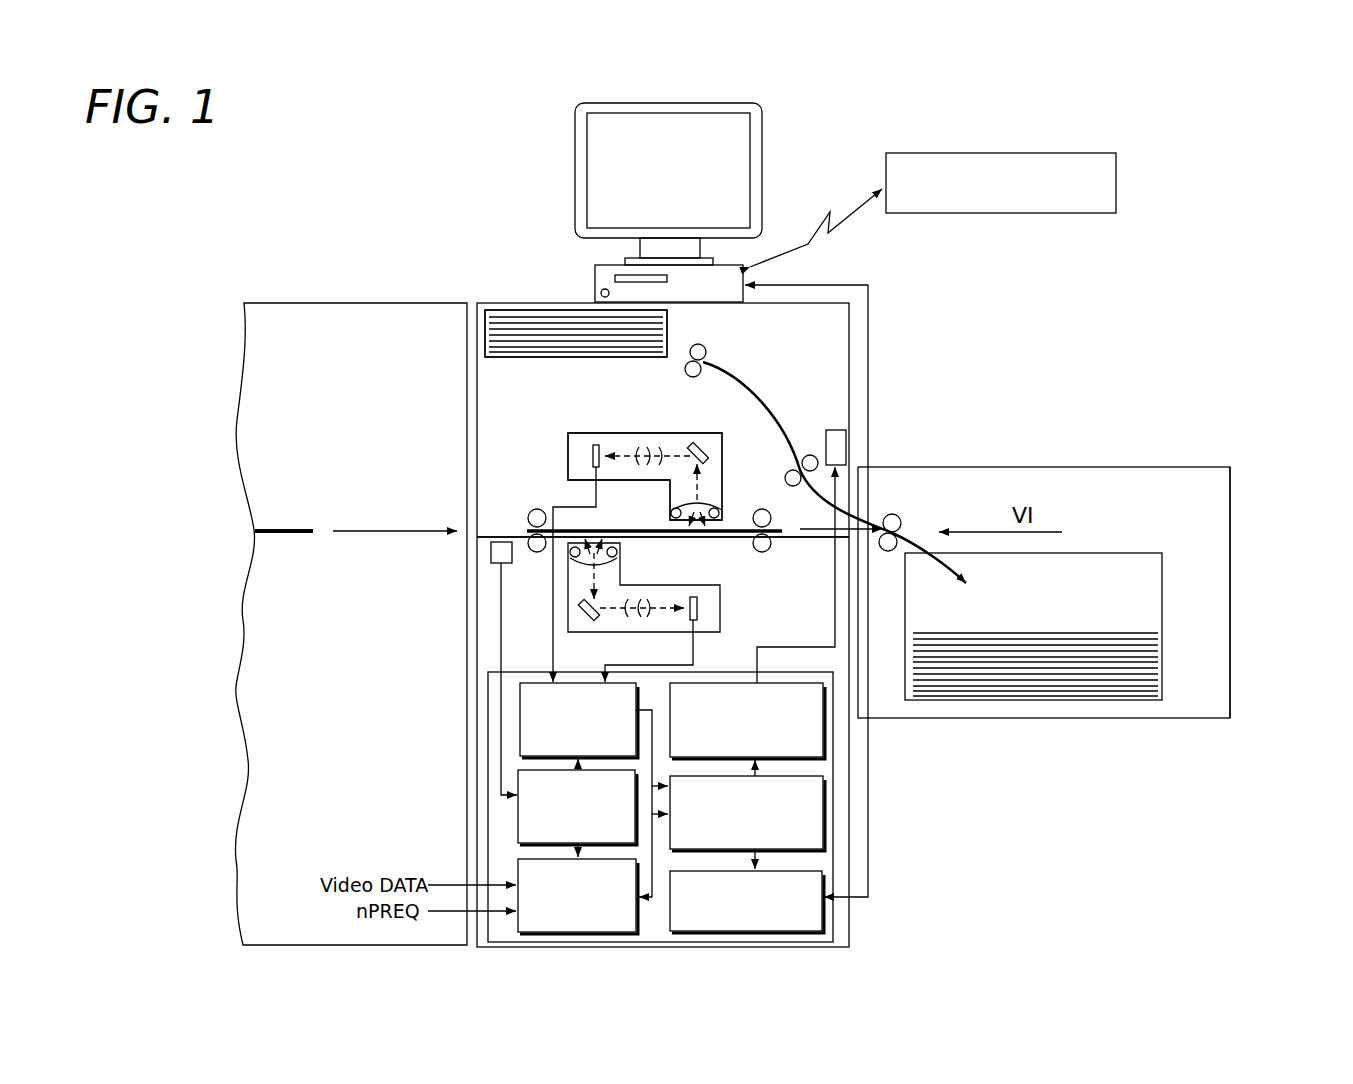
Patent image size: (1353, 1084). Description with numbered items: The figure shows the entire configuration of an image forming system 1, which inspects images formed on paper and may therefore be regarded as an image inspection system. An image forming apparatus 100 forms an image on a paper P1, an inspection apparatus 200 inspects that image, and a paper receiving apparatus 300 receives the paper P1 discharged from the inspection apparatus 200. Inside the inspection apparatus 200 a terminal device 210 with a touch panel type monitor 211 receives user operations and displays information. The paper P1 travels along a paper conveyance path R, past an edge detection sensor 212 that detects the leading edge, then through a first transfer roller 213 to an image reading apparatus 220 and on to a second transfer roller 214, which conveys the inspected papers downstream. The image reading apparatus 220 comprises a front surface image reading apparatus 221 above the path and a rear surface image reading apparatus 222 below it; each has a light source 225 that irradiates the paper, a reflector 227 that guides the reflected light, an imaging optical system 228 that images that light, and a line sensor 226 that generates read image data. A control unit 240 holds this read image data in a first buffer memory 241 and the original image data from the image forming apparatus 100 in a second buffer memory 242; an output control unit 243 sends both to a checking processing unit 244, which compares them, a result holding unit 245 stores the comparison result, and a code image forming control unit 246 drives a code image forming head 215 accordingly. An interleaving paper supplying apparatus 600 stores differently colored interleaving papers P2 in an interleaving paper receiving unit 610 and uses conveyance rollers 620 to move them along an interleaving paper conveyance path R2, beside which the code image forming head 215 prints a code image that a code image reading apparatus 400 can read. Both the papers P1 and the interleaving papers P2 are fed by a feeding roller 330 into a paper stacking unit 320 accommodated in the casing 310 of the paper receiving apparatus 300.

The image forming system 1 is at (291, 152).
The image forming apparatus 100 is at (335, 299).
The inspection apparatus 200 is at (826, 174).
The terminal device 210 is at (556, 141).
The touch panel type monitor 211 is at (578, 182).
The edge detection sensor 212 is at (489, 550).
The first transfer roller 213 is at (531, 509).
The second transfer roller 214 is at (753, 508).
The code image forming head 215 is at (838, 432).
The image reading apparatus 220 is at (577, 427).
The front surface image reading apparatus 221 is at (719, 431).
The rear surface image reading apparatus 222 is at (728, 605).
The light source 225 is at (670, 510).
The line sensor 226 is at (590, 450).
The reflector 227 is at (692, 438).
The imaging optical system 228 is at (641, 434).
The control unit 240 is at (487, 745).
The first buffer memory 241 is at (519, 713).
The second buffer memory 242 is at (517, 862).
The output control unit 243 is at (517, 800).
The checking processing unit 244 is at (823, 800).
The result holding unit 245 is at (823, 918).
The code image forming control unit 246 is at (825, 723).
The paper receiving apparatus 300 is at (1193, 427).
The casing 310 is at (1230, 525).
The paper stacking unit 320 is at (1125, 553).
The feeding roller 330 is at (908, 506).
The code image reading apparatus 400 is at (1077, 148).
The interleaving paper supplying apparatus 600 is at (820, 327).
The interleaving paper receiving unit 610 is at (484, 323).
The conveyance rollers 620 is at (727, 333).
The paper P1 is at (280, 534).
The interleaving paper P2 is at (525, 307).
The paper conveyance path R is at (823, 538).
The interleaving paper conveyance path R2 is at (763, 399).